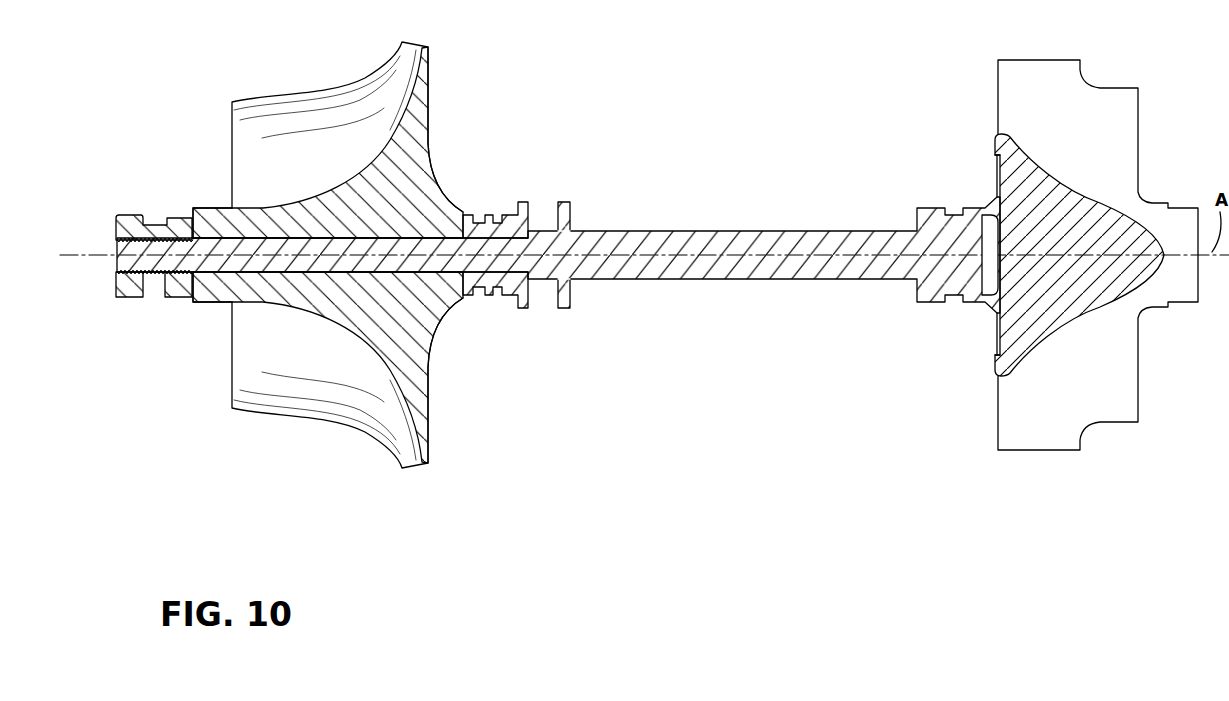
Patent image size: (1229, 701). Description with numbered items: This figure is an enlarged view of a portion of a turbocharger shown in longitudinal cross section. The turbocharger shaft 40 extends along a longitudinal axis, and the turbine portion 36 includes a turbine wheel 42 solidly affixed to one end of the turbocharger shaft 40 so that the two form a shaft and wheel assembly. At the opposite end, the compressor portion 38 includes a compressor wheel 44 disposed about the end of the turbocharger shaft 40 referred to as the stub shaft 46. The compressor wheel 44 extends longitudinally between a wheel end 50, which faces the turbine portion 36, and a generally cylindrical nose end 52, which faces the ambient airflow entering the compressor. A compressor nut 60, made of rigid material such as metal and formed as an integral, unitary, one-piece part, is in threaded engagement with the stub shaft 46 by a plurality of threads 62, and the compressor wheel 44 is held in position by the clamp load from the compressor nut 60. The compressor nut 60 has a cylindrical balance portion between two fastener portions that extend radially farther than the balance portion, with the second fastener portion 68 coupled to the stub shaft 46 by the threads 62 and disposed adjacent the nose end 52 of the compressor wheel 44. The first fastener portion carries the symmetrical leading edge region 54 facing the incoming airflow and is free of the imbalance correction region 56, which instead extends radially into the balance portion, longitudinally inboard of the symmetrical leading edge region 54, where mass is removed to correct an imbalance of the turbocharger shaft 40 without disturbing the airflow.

The turbine portion 36 is at (1104, 84).
The compressor portion 38 is at (274, 90).
The turbocharger shaft 40 is at (686, 283).
The turbine wheel 42 is at (1057, 308).
The compressor wheel 44 is at (340, 320).
The stub shaft 46 is at (427, 267).
The wheel end 50 is at (425, 208).
The nose end 52 is at (213, 210).
The symmetrical leading edge region 54 is at (118, 300).
The imbalance correction region 56 is at (157, 298).
The compressor nut 60 is at (127, 211).
The threads 62 is at (128, 281).
The second fastener portion 68 is at (170, 300).